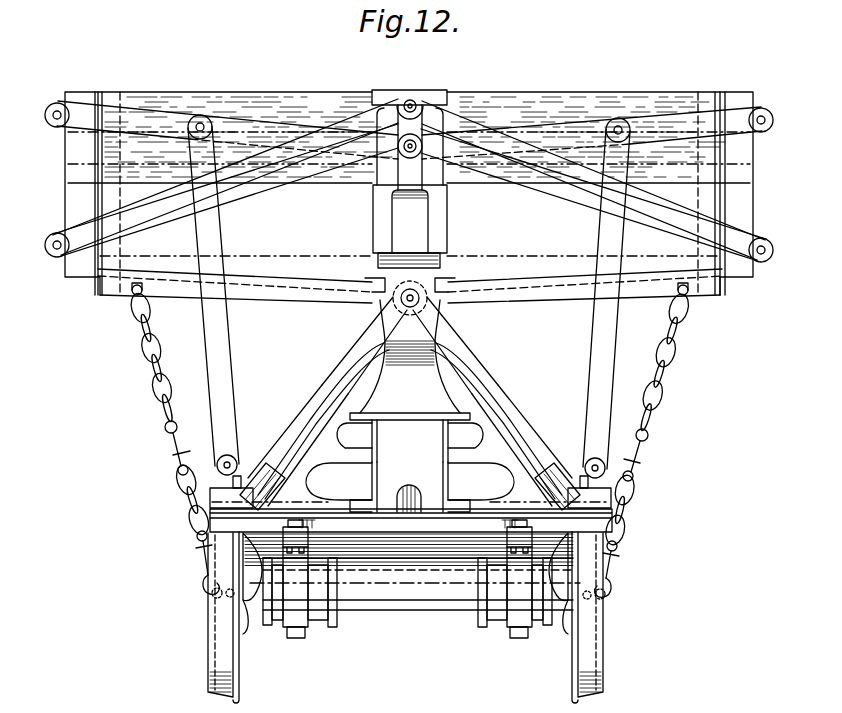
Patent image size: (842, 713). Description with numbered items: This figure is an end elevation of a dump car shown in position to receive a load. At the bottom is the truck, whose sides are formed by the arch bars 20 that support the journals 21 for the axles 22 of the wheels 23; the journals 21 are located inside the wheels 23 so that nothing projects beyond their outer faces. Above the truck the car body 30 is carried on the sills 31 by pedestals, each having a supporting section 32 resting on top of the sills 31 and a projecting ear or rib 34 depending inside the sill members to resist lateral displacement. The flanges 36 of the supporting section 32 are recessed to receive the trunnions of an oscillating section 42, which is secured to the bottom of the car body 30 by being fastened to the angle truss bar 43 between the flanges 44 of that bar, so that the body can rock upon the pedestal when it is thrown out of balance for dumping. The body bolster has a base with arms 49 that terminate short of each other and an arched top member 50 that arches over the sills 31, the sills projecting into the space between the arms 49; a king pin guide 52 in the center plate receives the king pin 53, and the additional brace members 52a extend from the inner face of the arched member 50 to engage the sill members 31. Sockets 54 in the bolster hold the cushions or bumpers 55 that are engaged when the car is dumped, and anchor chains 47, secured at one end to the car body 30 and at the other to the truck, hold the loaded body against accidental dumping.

The arch bars 20 is at (297, 541).
The journals 21 is at (320, 613).
The axles 22 is at (445, 596).
The wheels 23 is at (242, 663).
The car body 30 is at (295, 262).
The sills 31 is at (442, 461).
The supporting section 32 is at (368, 339).
The projecting ear or rib 34 is at (442, 422).
The flanges 36 is at (442, 308).
The oscillating section 42 is at (402, 291).
The angle truss bar 43 is at (382, 280).
The flanges 44 is at (450, 290).
The anchor chains 47 is at (160, 406).
The arms 49 is at (313, 497).
The top member 50 is at (466, 388).
The king pin guide 52 is at (362, 533).
The brace extension 52a is at (533, 368).
The king pin 53 is at (396, 494).
The sockets 54 is at (268, 476).
The cushions or bumpers 55 is at (218, 465).